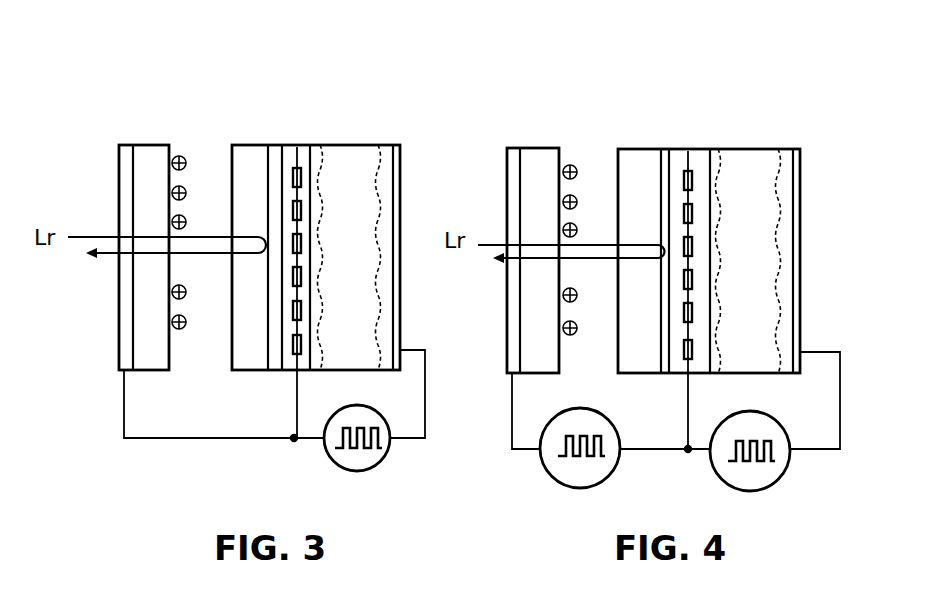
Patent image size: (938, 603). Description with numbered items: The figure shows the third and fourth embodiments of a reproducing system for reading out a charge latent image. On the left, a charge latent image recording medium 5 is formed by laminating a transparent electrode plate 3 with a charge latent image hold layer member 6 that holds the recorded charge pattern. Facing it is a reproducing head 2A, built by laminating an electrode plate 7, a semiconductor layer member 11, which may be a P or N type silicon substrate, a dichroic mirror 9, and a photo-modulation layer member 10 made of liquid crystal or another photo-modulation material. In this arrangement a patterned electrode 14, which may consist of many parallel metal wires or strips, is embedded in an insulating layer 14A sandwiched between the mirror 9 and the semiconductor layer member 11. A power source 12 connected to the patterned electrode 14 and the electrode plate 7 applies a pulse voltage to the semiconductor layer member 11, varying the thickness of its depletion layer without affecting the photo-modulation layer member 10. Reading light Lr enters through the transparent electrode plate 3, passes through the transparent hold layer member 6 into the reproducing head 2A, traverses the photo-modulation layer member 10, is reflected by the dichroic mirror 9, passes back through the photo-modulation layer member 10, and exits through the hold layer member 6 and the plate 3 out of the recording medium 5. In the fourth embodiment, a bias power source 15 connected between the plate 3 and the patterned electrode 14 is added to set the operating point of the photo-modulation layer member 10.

In FIG. 3, the reproducing head 2A is at (399, 140).
In FIG. 4, the reproducing head 2A is at (805, 133).
In FIG. 3, the transparent electrode plate 3 is at (125, 172).
In FIG. 4, the transparent electrode plate 3 is at (510, 167).
In FIG. 3, the charge latent image recording medium 5 is at (116, 137).
In FIG. 4, the charge latent image recording medium 5 is at (512, 143).
In FIG. 3, the charge latent image hold layer member 6 is at (153, 162).
In FIG. 4, the charge latent image hold layer member 6 is at (540, 165).
In FIG. 3, the electrode plate 7 is at (397, 197).
In FIG. 4, the electrode plate 7 is at (803, 165).
In FIG. 3, the dichroic mirror 9 is at (276, 147).
In FIG. 4, the dichroic mirror 9 is at (668, 160).
In FIG. 3, the photo-modulation layer member 10 is at (247, 147).
In FIG. 4, the photo-modulation layer member 10 is at (630, 158).
In FIG. 3, the semiconductor layer member 11 is at (312, 141).
In FIG. 4, the semiconductor layer member 11 is at (793, 145).
In FIG. 3, the power source 12 is at (343, 458).
In FIG. 4, the power source 12 is at (778, 470).
In FIG. 3, the patterned electrode 14 is at (297, 147).
In FIG. 4, the patterned electrode 14 is at (688, 170).
In FIG. 3, the insulating layer 14A is at (288, 329).
In FIG. 4, the insulating layer 14A is at (675, 330).
In FIG. 4, the bias power source 15 is at (600, 468).